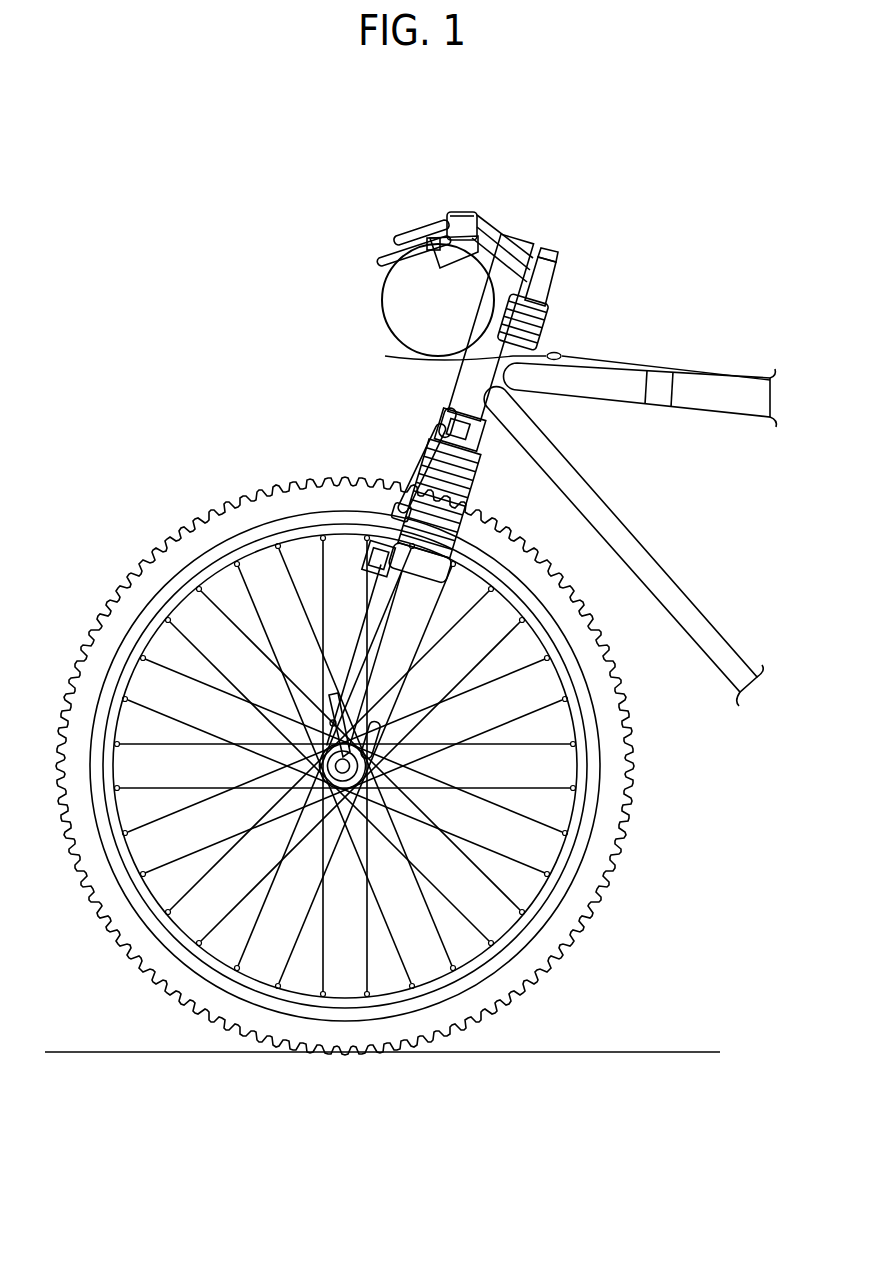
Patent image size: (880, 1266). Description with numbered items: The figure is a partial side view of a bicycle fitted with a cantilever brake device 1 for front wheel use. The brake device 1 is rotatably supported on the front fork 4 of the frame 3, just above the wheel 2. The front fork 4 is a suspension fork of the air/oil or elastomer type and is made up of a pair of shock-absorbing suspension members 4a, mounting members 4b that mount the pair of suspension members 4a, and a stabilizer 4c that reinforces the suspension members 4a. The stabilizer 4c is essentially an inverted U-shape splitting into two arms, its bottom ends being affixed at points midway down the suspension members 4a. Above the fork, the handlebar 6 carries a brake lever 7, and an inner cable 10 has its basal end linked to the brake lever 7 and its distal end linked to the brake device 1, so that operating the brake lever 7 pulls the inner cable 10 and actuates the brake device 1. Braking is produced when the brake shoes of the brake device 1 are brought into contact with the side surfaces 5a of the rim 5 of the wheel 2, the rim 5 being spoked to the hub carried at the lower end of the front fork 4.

The cantilever brake device 1 is at (386, 497).
The wheel 2 is at (128, 568).
The frame 3 is at (631, 350).
The front fork 4 is at (376, 598).
The suspension members 4a is at (413, 601).
The mounting members 4b is at (478, 457).
The stabilizer 4c is at (445, 418).
The rim 5 is at (528, 683).
The side surfaces 5a is at (577, 717).
The handlebar 6 is at (460, 209).
The brake lever 7 is at (400, 234).
The inner cable 10 is at (418, 458).